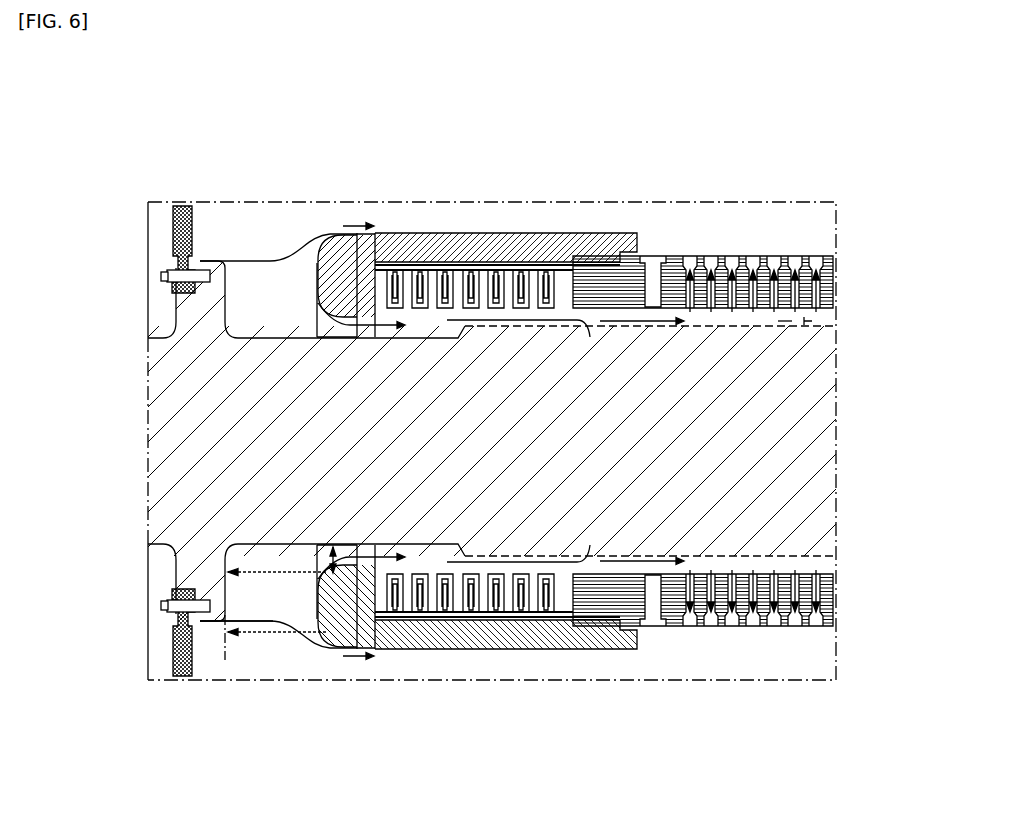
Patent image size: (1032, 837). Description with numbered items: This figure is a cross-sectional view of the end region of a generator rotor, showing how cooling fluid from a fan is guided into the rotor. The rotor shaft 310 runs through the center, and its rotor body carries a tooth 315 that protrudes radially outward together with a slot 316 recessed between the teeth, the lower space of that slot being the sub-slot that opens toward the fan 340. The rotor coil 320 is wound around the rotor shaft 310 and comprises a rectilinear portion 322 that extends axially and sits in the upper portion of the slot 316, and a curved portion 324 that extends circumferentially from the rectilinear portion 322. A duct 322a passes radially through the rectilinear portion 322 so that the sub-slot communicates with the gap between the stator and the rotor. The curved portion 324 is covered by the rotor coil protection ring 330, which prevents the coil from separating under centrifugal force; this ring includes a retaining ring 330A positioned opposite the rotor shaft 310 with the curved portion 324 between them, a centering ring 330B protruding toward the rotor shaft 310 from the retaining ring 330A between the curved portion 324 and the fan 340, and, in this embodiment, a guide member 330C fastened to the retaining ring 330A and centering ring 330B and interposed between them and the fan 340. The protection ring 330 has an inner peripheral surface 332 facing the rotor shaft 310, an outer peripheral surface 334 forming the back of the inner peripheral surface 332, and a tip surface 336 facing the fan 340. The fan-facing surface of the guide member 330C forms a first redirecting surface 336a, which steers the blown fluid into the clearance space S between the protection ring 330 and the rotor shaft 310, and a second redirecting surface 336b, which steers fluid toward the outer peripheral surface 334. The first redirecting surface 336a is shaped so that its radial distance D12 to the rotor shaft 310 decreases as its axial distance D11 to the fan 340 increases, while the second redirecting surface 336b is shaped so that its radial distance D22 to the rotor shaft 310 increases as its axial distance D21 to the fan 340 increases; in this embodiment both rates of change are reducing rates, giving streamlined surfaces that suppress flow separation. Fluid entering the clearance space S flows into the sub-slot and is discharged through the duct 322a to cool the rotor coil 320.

The rotor shaft 310 is at (170, 415).
The fan 340 is at (183, 204).
The tip surface 336 is at (370, 166).
The first redirecting surface 336a is at (315, 306).
The second redirecting surface 336b is at (343, 226).
The outer peripheral surface 334 is at (381, 233).
The inner peripheral surface 332 is at (398, 233).
The rotor coil 320 is at (822, 134).
The rectilinear portion 322 is at (673, 272).
The duct 322a is at (773, 256).
The curved portion 324 is at (522, 278).
The slot 316 is at (808, 322).
The tooth 315 is at (782, 324).
The clearance space S is at (372, 348).
The rotor coil protection ring 330 is at (500, 744).
The retaining ring 330A is at (483, 636).
The centering ring 330B is at (378, 648).
The guide member 330C is at (340, 658).
The distance to the fan D11 is at (276, 606).
The distance to the fan D21 is at (277, 641).
The distance to the rotor shaft D12 is at (333, 547).
The distance to the rotor shaft D22 is at (200, 621).